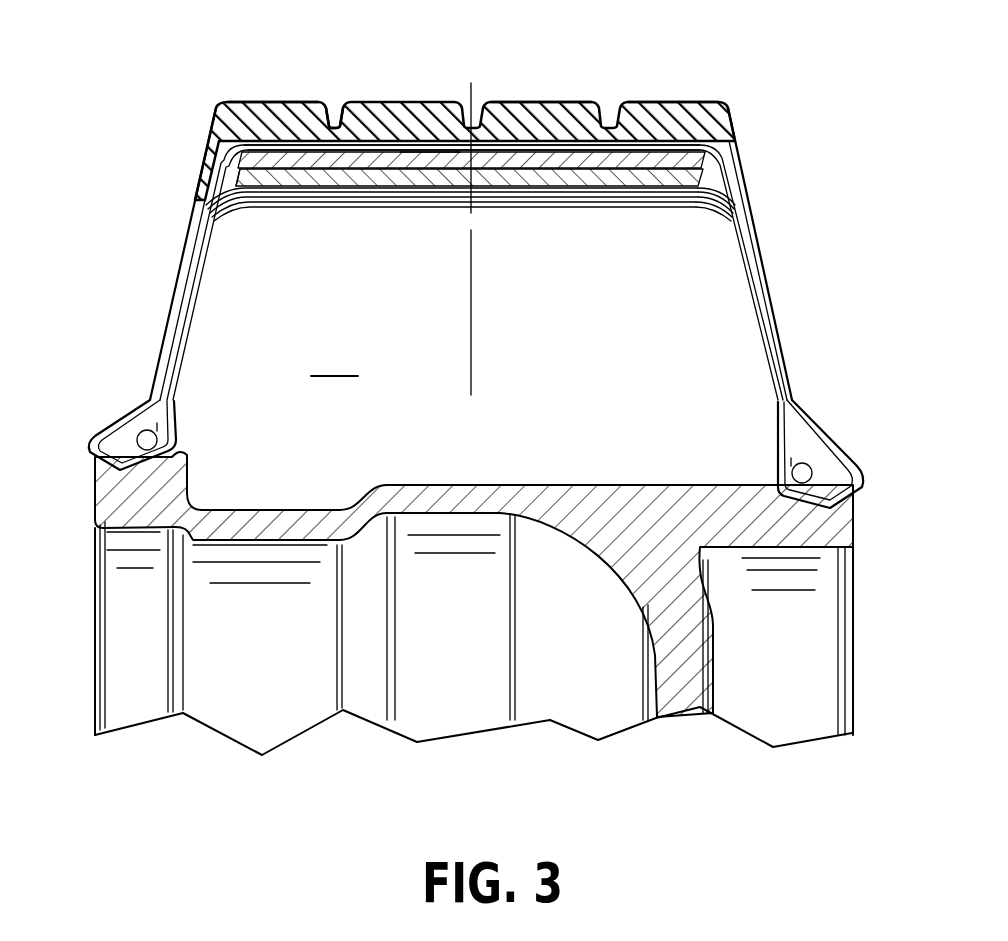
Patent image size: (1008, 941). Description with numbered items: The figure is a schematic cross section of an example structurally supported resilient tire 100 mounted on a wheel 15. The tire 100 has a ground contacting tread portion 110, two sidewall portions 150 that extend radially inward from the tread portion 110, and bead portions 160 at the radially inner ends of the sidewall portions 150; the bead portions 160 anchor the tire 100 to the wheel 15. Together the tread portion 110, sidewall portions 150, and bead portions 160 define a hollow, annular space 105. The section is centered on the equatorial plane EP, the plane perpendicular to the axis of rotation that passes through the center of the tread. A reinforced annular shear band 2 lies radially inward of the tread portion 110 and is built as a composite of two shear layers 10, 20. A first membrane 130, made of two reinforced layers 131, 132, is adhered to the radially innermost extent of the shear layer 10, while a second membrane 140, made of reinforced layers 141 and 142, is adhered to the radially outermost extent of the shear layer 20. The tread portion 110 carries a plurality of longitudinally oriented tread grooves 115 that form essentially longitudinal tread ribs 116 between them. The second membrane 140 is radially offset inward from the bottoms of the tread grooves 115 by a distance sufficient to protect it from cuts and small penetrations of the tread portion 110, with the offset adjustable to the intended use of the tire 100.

The reinforced annular shear band 2 is at (300, 134).
The shear layer 10 is at (246, 184).
The wheel 15 is at (640, 476).
The shear layer 20 is at (427, 162).
The structurally supported resilient tire 100 is at (462, 256).
The hollow annular space 105 is at (334, 362).
The ground contacting tread portion 110 is at (461, 102).
The tread grooves 115 is at (463, 112).
The tread ribs 116 is at (516, 100).
The first membrane 130 is at (493, 249).
The reinforced layer 131 is at (664, 189).
The reinforced layer 132 is at (668, 186).
The second membrane 140 is at (635, 128).
The reinforced layer 141 is at (668, 153).
The reinforced layer 142 is at (684, 140).
The sidewall portions 150 is at (170, 293).
The bead portions 160 is at (131, 414).
The equatorial plane EP is at (472, 327).